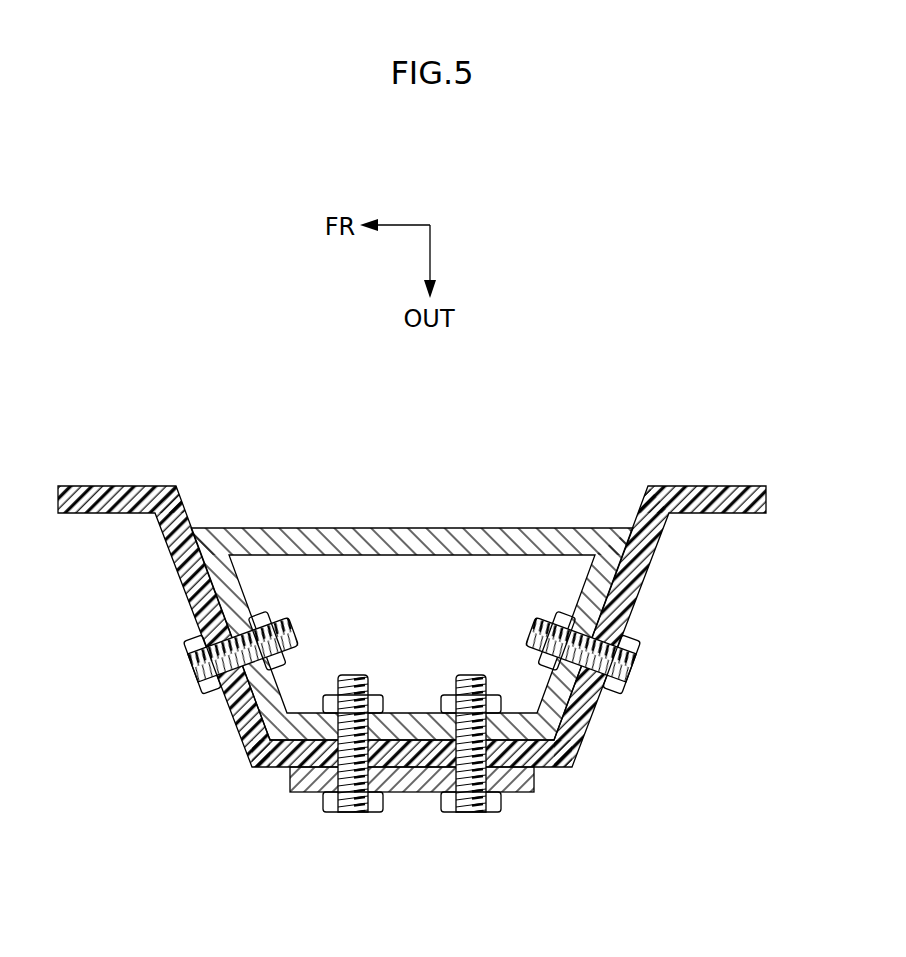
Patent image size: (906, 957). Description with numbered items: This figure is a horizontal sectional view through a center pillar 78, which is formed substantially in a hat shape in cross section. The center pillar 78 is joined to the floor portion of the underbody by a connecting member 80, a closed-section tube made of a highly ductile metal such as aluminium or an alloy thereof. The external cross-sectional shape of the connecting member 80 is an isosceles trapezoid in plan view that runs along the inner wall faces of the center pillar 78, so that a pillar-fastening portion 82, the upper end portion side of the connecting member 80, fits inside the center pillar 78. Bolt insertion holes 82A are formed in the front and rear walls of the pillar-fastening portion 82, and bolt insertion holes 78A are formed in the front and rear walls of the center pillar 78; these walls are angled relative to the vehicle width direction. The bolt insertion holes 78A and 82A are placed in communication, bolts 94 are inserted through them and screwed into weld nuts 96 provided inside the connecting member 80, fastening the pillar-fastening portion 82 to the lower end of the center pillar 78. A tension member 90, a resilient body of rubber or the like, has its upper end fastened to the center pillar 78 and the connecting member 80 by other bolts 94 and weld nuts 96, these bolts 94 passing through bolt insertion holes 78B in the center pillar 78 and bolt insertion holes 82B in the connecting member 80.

The center pillar 78 is at (412, 666).
The bolt insertion holes 78A is at (192, 613).
The bolt insertion holes 78B is at (288, 770).
The connecting member 80 is at (458, 528).
The pillar-fastening portion 82 is at (433, 621).
The bolt insertion holes 82A is at (228, 704).
The bolt insertion holes 82B is at (330, 728).
The tension member 90 is at (414, 792).
The bolts 94 is at (200, 668).
The weld nuts 96 is at (263, 612).